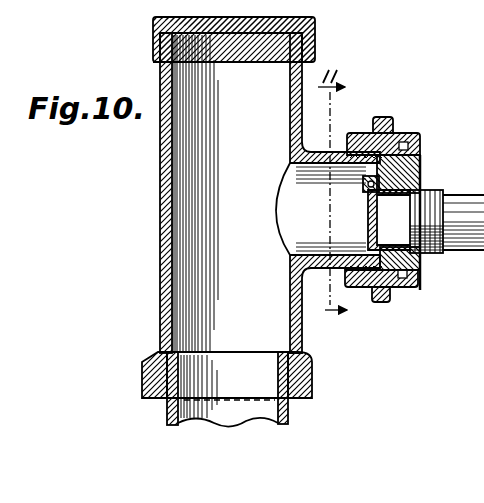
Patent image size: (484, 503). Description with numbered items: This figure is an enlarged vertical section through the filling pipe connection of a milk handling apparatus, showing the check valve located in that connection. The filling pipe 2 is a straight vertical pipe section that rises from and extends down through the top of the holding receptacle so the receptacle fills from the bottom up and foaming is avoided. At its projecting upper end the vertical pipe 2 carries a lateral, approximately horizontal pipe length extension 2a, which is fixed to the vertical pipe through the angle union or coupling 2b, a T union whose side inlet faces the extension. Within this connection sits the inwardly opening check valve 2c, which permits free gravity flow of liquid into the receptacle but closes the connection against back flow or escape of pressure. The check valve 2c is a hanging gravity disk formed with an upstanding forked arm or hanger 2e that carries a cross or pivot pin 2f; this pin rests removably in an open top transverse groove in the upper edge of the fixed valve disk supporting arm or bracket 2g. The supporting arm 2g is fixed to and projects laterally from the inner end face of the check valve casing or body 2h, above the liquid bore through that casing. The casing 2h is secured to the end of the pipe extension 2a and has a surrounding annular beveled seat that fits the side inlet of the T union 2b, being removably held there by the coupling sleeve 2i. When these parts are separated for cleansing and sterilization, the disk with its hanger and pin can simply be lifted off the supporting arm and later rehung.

The filling pipe 2 is at (287, 408).
The pipe length extension 2a is at (462, 203).
The angle union or coupling 2b is at (160, 228).
The check valve 2c is at (368, 218).
The forked arm or hanger 2e is at (365, 190).
The cross or pivot pin 2f is at (391, 133).
The valve disk supporting arm or bracket 2g is at (423, 160).
The check valve casing or body 2h is at (425, 278).
The coupling sleeve 2i is at (362, 288).